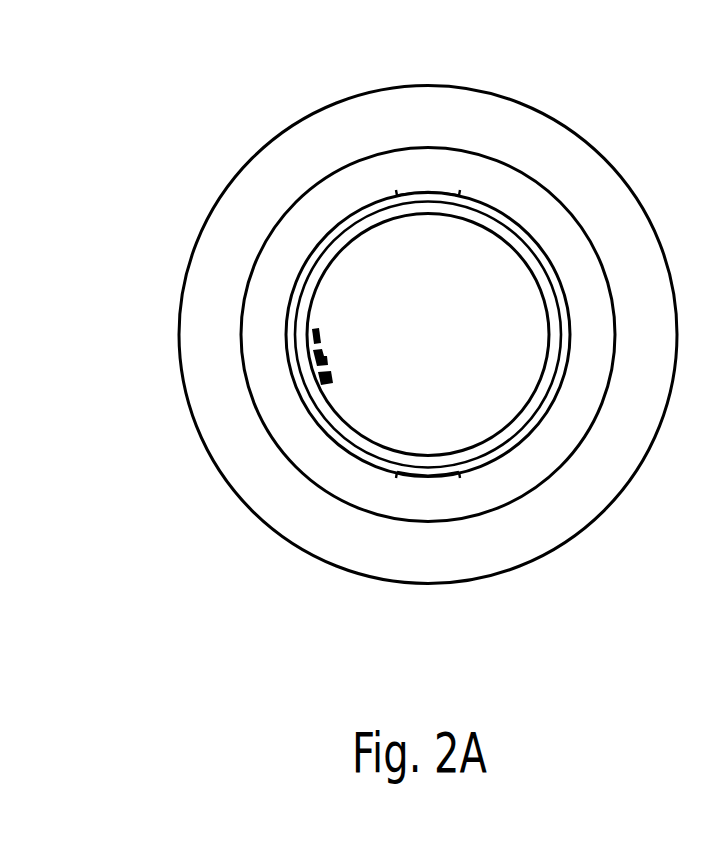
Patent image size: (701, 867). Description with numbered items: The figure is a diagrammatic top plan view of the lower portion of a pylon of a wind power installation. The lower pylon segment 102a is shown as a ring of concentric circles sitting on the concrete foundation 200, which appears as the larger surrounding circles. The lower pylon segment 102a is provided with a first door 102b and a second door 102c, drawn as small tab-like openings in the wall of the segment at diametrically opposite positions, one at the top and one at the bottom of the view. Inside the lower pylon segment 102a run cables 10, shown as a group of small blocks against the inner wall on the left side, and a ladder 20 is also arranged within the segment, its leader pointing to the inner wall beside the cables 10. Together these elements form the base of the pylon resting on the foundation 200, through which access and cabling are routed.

The foundation 200 is at (458, 103).
The lower pylon segment 102a is at (322, 240).
The first door 102b is at (410, 190).
The second door 102c is at (423, 478).
The ladder 20 is at (328, 353).
The cables 10 is at (313, 373).